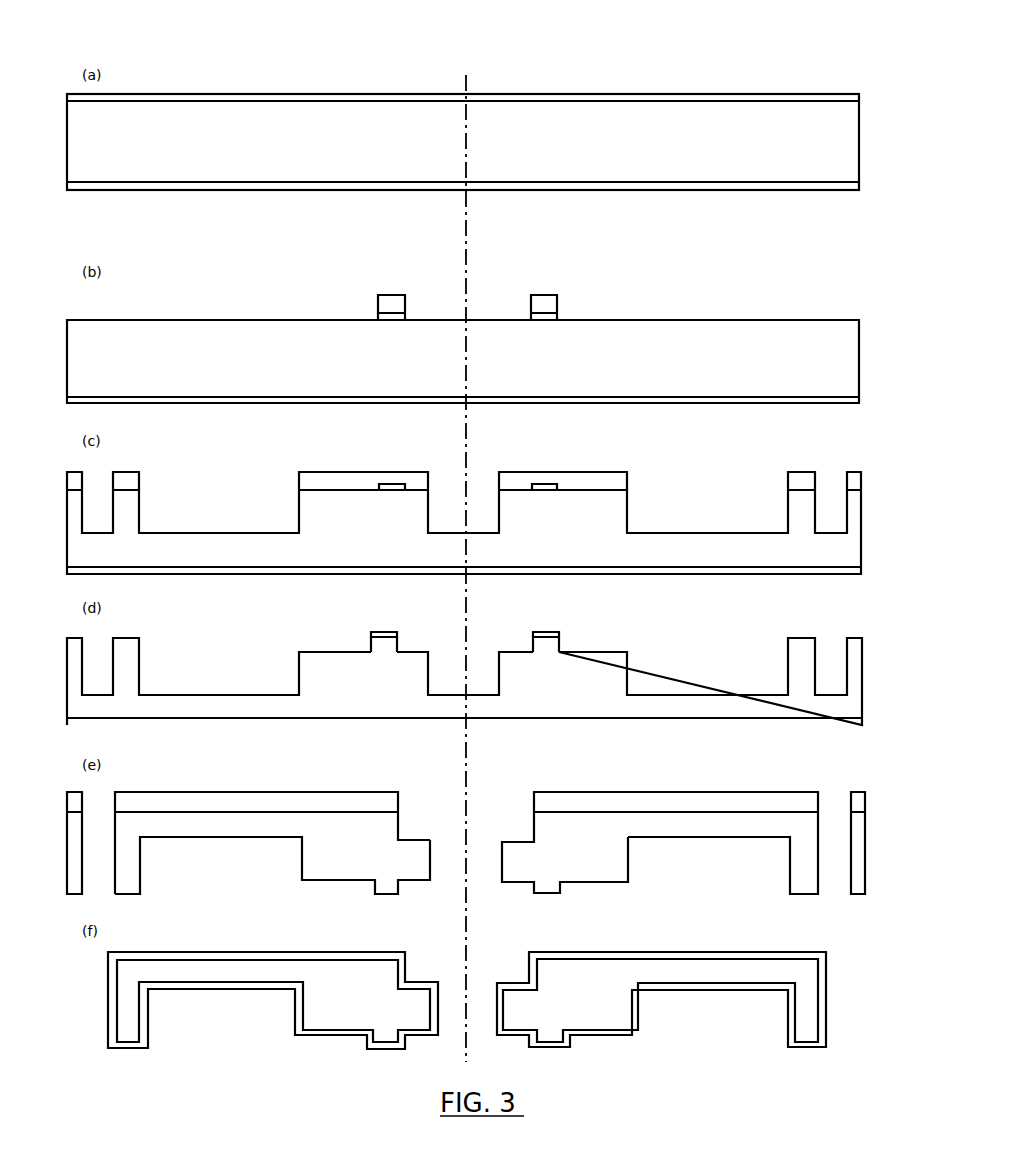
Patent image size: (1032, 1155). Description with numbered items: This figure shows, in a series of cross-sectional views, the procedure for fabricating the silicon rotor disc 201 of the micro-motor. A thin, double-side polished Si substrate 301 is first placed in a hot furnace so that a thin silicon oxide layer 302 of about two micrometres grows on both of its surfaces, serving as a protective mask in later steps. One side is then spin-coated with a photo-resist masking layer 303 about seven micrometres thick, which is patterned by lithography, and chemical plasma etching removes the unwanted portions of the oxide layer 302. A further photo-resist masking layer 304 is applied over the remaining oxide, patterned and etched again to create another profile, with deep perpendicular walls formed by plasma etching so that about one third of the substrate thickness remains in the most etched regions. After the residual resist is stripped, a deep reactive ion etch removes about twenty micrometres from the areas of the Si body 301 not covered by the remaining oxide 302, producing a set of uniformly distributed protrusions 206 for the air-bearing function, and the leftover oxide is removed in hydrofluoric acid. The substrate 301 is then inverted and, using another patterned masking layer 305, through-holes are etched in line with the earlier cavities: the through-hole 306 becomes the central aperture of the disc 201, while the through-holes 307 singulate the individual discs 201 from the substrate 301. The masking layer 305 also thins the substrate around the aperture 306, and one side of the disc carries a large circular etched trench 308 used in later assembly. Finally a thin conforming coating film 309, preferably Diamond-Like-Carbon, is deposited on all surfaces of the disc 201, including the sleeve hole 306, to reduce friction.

The Si substrate 301 is at (371, 133).
The silicon oxide layer 302 is at (543, 183).
The photo-resist masking layer 303 is at (394, 298).
The photo-resist masking layer 304 is at (140, 483).
The protrusions 206 is at (368, 640).
The patterned masking layer 305 is at (342, 798).
The through-hole 306 is at (482, 818).
The through-holes 307 is at (838, 798).
The etched trench 308 is at (257, 850).
The conforming coating film 309 is at (290, 955).
The rotor disc 201 is at (657, 972).